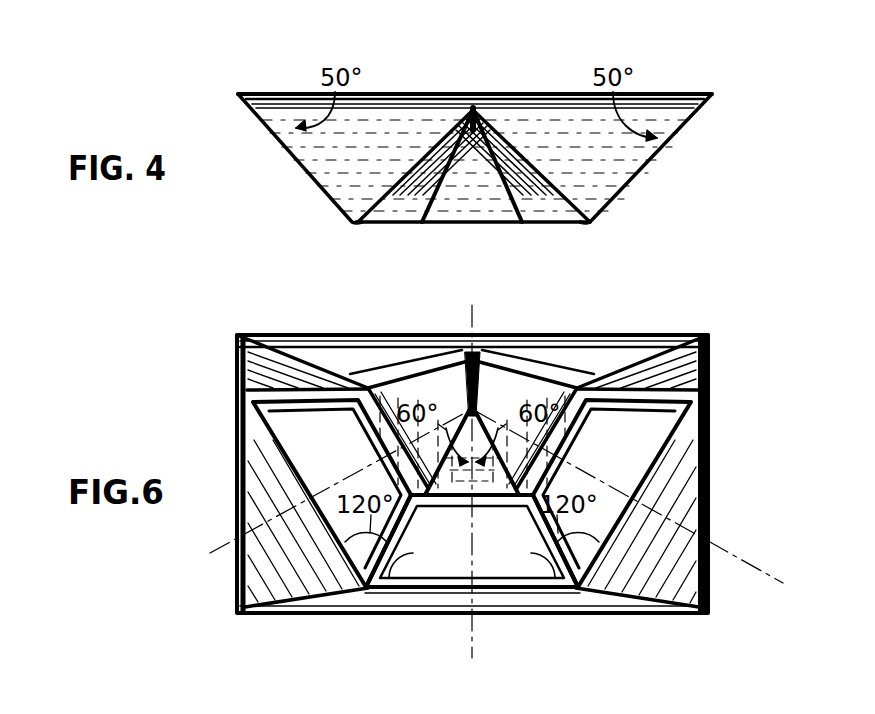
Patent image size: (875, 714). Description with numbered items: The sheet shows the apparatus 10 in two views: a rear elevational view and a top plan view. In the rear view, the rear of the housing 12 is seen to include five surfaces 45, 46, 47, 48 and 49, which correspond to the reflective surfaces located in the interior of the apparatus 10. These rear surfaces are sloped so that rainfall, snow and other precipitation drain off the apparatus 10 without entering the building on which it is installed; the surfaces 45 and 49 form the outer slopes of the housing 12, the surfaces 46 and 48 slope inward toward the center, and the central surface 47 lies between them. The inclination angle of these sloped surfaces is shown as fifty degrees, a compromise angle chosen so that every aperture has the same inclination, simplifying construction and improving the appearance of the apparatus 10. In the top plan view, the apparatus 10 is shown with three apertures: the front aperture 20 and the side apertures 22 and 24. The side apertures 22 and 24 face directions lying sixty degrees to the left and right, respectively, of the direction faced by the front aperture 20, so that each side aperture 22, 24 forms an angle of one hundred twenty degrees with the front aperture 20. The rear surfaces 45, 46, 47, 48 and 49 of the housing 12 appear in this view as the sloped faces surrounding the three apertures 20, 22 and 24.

In FIG. 4, the apparatus 10 is at (698, 173).
In FIG. 6, the apparatus 10 is at (768, 420).
In FIG. 4, the housing 12 is at (712, 93).
In FIG. 6, the housing 12 is at (660, 341).
In FIG. 6, the front aperture 20 is at (500, 512).
In FIG. 6, the side aperture 22 is at (320, 411).
In FIG. 6, the side aperture 24 is at (583, 430).
In FIG. 4, the surface 45 is at (322, 186).
In FIG. 6, the surface 45 is at (360, 390).
In FIG. 4, the surface 46 is at (412, 172).
In FIG. 6, the surface 46 is at (420, 392).
In FIG. 4, the surface 47 is at (470, 207).
In FIG. 6, the surface 47 is at (472, 423).
In FIG. 4, the surface 48 is at (528, 172).
In FIG. 6, the surface 48 is at (514, 392).
In FIG. 4, the surface 49 is at (606, 184).
In FIG. 6, the surface 49 is at (588, 394).